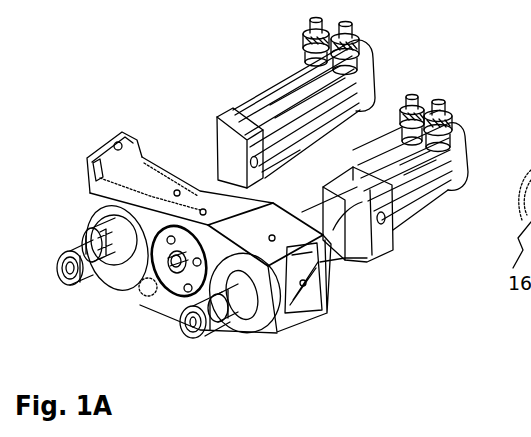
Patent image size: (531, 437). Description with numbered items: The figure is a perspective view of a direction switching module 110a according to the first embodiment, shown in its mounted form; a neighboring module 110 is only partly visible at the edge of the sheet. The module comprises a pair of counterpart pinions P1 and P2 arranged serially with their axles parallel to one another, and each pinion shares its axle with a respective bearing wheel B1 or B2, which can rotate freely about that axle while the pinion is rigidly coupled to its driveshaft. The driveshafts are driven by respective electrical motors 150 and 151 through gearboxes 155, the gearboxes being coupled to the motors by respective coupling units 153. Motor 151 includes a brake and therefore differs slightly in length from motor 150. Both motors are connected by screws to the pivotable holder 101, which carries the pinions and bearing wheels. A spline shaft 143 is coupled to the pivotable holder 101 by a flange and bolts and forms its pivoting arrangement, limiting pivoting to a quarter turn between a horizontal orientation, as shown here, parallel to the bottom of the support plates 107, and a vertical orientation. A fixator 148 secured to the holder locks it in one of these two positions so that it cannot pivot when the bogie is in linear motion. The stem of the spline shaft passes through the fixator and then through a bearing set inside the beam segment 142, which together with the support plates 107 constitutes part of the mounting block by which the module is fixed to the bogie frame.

The electrical motor 151 is at (262, 100).
The beam segment 142 is at (322, 176).
The fixator 148 is at (240, 177).
The direction switching module 110a is at (462, 68).
The pivotable holder 101 is at (283, 320).
The spline shaft 143 is at (158, 275).
The support plates 107 is at (152, 294).
The counterpart pinion P2 is at (80, 232).
The bearing wheel B2 is at (57, 262).
The bearing wheel B1 is at (187, 343).
The counterpart pinion P1 is at (228, 330).
The gearbox 155 is at (345, 252).
The coupling unit 153 is at (385, 250).
The electrical motor 150 is at (428, 220).
The adjacent pump unit 110 is at (517, 275).